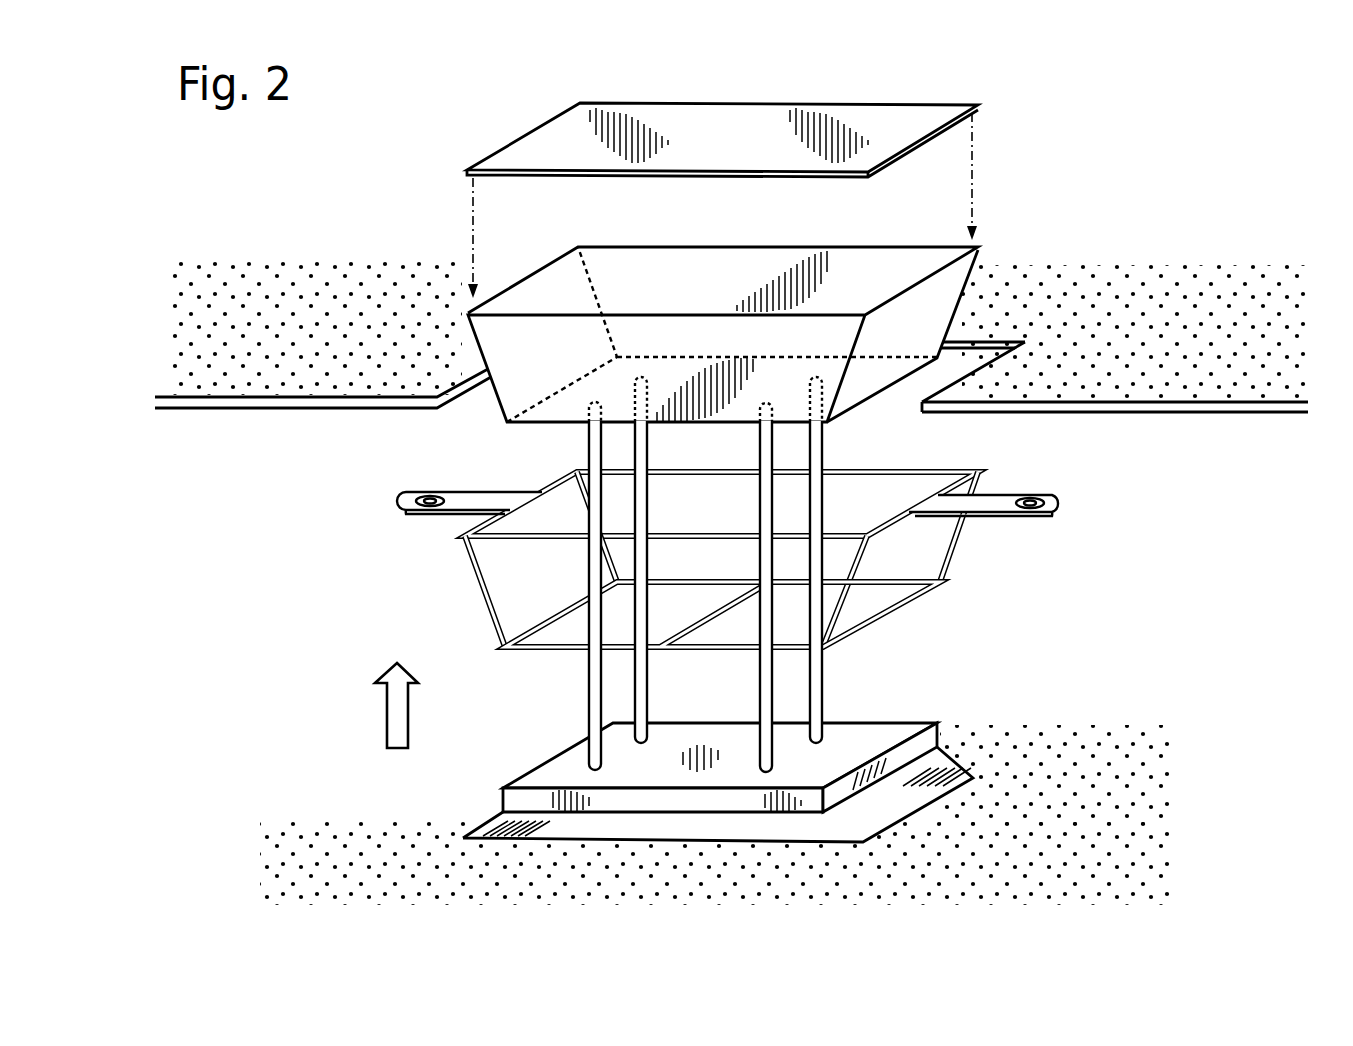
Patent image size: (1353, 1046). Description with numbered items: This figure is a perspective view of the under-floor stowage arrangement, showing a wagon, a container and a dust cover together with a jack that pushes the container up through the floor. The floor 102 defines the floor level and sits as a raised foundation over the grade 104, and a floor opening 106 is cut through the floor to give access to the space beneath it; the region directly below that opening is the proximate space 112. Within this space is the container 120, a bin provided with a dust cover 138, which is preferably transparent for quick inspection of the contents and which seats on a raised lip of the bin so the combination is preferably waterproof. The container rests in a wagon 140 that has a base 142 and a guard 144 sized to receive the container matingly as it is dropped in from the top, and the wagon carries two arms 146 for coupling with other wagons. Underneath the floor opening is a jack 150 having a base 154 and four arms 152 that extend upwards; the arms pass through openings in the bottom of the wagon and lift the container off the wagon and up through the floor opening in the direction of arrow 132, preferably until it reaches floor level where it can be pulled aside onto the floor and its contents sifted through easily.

The floor 102 is at (1150, 313).
The grade 104 is at (978, 866).
The floor opening 106 is at (975, 348).
The proximate space 112 is at (400, 457).
The container 120 is at (515, 302).
The arrow 132 is at (397, 720).
The dust cover 138 is at (548, 148).
The wagon 140 is at (472, 605).
The base 142 is at (885, 617).
The guard 144 is at (963, 535).
The arms 146 is at (435, 515).
The jack 150 is at (490, 799).
The arms 152 is at (812, 735).
The base 154 is at (895, 801).